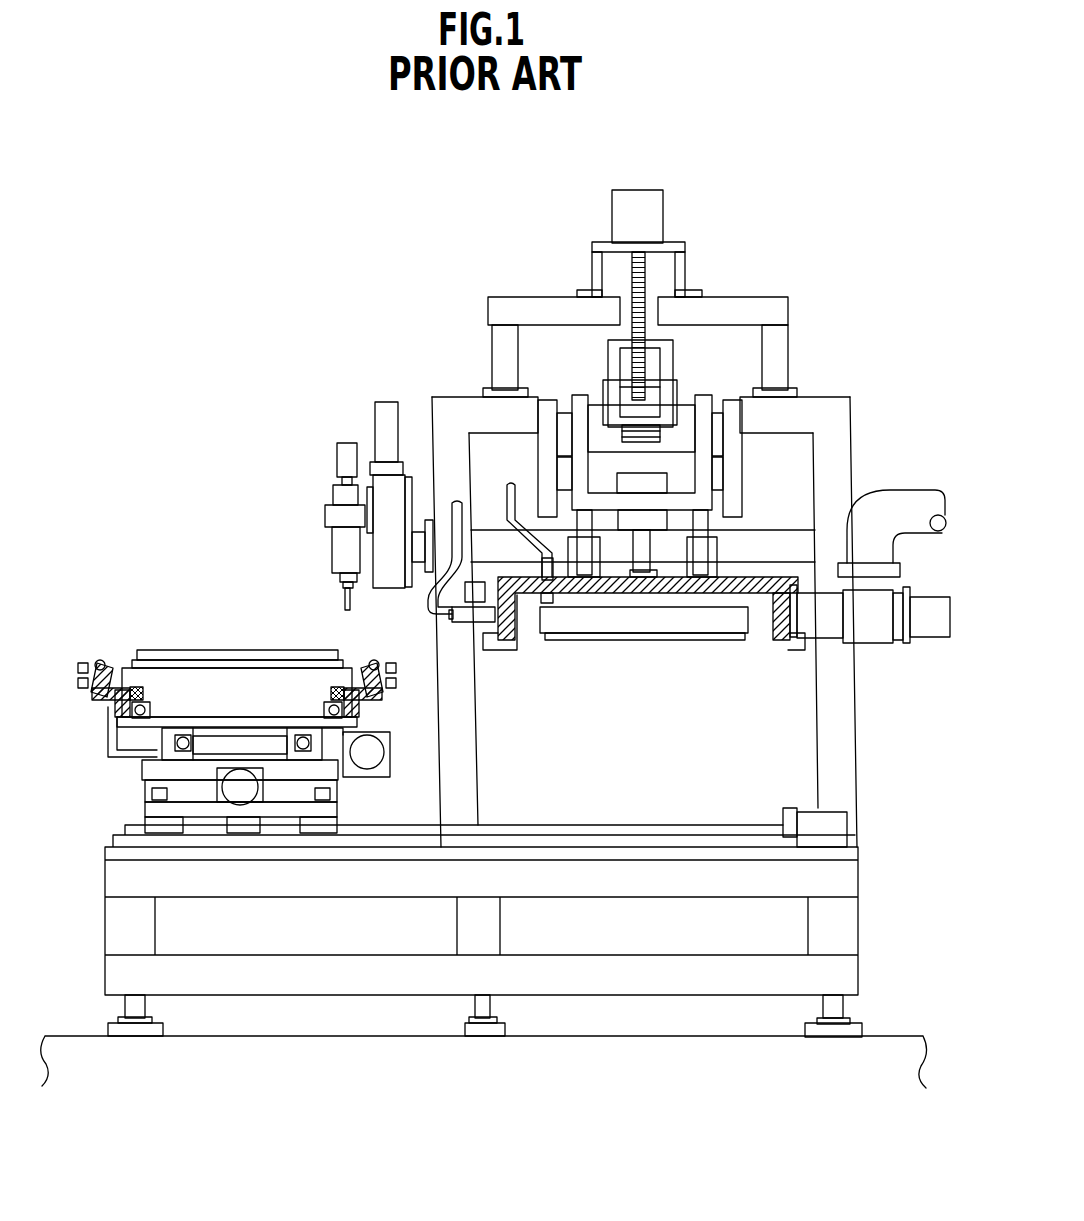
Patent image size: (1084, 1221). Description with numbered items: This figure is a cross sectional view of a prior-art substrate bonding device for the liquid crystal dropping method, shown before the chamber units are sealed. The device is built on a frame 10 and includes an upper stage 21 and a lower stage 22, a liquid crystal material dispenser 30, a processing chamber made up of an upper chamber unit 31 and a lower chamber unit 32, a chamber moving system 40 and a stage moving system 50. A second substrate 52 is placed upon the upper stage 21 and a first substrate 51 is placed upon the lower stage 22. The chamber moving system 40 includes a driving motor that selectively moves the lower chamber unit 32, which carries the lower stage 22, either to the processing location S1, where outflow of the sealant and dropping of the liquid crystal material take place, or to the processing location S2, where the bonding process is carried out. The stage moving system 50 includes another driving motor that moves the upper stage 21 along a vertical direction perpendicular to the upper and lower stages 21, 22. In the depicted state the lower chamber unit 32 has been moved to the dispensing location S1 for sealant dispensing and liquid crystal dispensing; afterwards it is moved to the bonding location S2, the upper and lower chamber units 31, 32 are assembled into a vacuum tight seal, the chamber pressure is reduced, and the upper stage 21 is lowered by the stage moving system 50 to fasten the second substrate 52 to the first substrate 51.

The frame 10 is at (843, 742).
The upper stage 21 is at (650, 614).
The lower stage 22 is at (175, 683).
The liquid crystal material dispenser 30 is at (325, 539).
The upper chamber unit 31 is at (530, 596).
The lower chamber unit 32 is at (93, 708).
The chamber moving system 40 is at (837, 825).
The stage moving system 50 is at (683, 217).
The first substrate 51 is at (225, 648).
The second substrate 52 is at (720, 641).
The processing location for sealant and liquid crystal dispensing S1 is at (340, 373).
The processing location for substrate bonding S2 is at (655, 166).